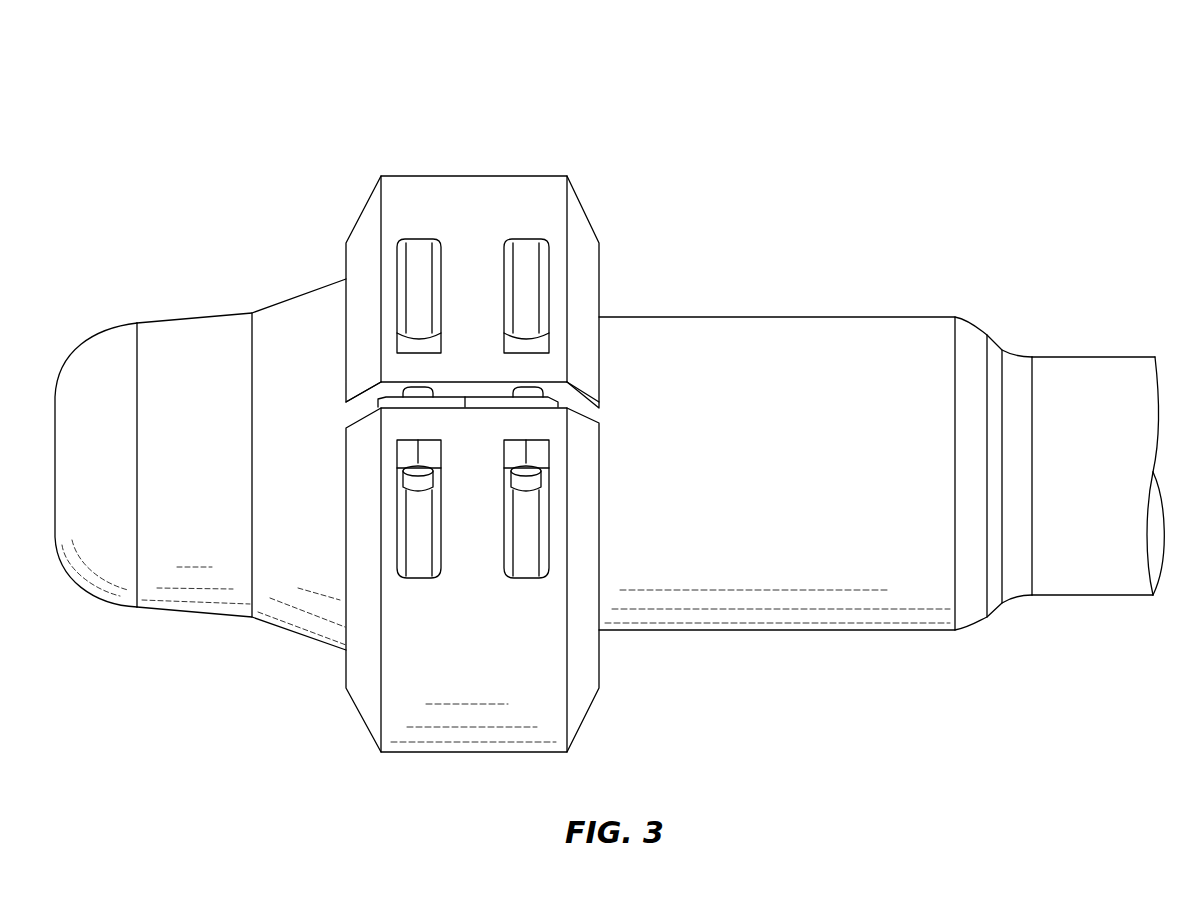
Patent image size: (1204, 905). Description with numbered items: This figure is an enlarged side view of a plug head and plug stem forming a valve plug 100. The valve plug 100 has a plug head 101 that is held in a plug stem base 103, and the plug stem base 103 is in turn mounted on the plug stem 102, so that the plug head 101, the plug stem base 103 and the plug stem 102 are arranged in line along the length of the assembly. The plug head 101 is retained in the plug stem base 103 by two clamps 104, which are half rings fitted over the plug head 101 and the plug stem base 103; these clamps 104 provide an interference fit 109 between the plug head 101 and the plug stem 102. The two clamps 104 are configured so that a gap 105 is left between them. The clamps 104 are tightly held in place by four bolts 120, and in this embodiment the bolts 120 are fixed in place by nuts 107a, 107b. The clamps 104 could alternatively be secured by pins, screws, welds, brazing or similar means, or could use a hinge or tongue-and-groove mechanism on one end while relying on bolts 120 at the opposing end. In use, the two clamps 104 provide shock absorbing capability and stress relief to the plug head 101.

The valve plug 100 is at (917, 83).
The plug head 101 is at (200, 313).
The plug stem 102 is at (1091, 375).
The plug stem base 103 is at (748, 318).
The clamps 104 is at (483, 188).
The gap 105 is at (587, 406).
The nut 107a is at (402, 450).
The nut 107b is at (535, 455).
The interference fit 109 is at (455, 406).
The bolts 120 is at (525, 290).